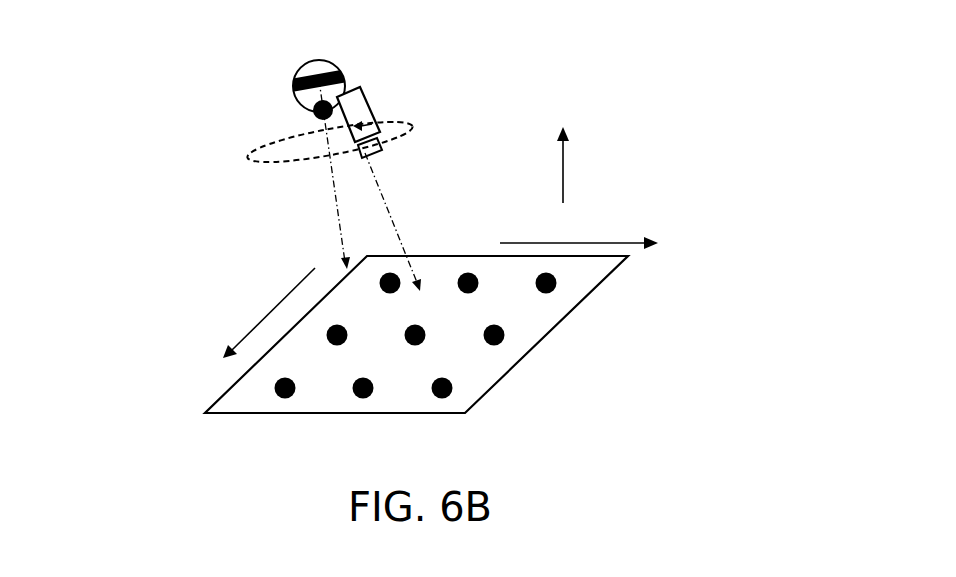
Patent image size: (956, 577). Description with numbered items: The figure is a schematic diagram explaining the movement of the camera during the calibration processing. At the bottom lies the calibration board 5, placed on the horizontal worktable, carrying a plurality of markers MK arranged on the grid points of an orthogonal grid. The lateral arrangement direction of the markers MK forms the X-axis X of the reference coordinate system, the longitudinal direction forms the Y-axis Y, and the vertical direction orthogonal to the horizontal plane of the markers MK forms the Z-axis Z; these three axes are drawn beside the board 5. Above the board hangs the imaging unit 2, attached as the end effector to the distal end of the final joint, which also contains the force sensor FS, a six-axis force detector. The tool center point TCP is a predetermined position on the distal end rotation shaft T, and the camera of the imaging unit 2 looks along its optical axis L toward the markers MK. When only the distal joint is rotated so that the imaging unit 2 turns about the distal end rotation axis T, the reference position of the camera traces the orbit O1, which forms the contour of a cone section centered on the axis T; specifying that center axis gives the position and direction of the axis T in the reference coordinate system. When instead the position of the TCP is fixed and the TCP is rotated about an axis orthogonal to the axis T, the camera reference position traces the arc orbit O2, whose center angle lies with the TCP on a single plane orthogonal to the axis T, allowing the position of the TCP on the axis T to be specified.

The imaging unit 2 is at (398, 103).
The calibration board 5 is at (403, 360).
The markers MK is at (416, 362).
The force sensor FS is at (267, 73).
The tool center point TCP is at (267, 97).
The orbit of the reference position of the camera O1 is at (285, 142).
The orbit of the reference position of the camera O2 is at (410, 127).
The distal end rotation shaft T is at (334, 174).
The optical axis L is at (393, 222).
The X-axis X is at (589, 243).
The Y-axis Y is at (258, 326).
The Z-axis Z is at (562, 152).